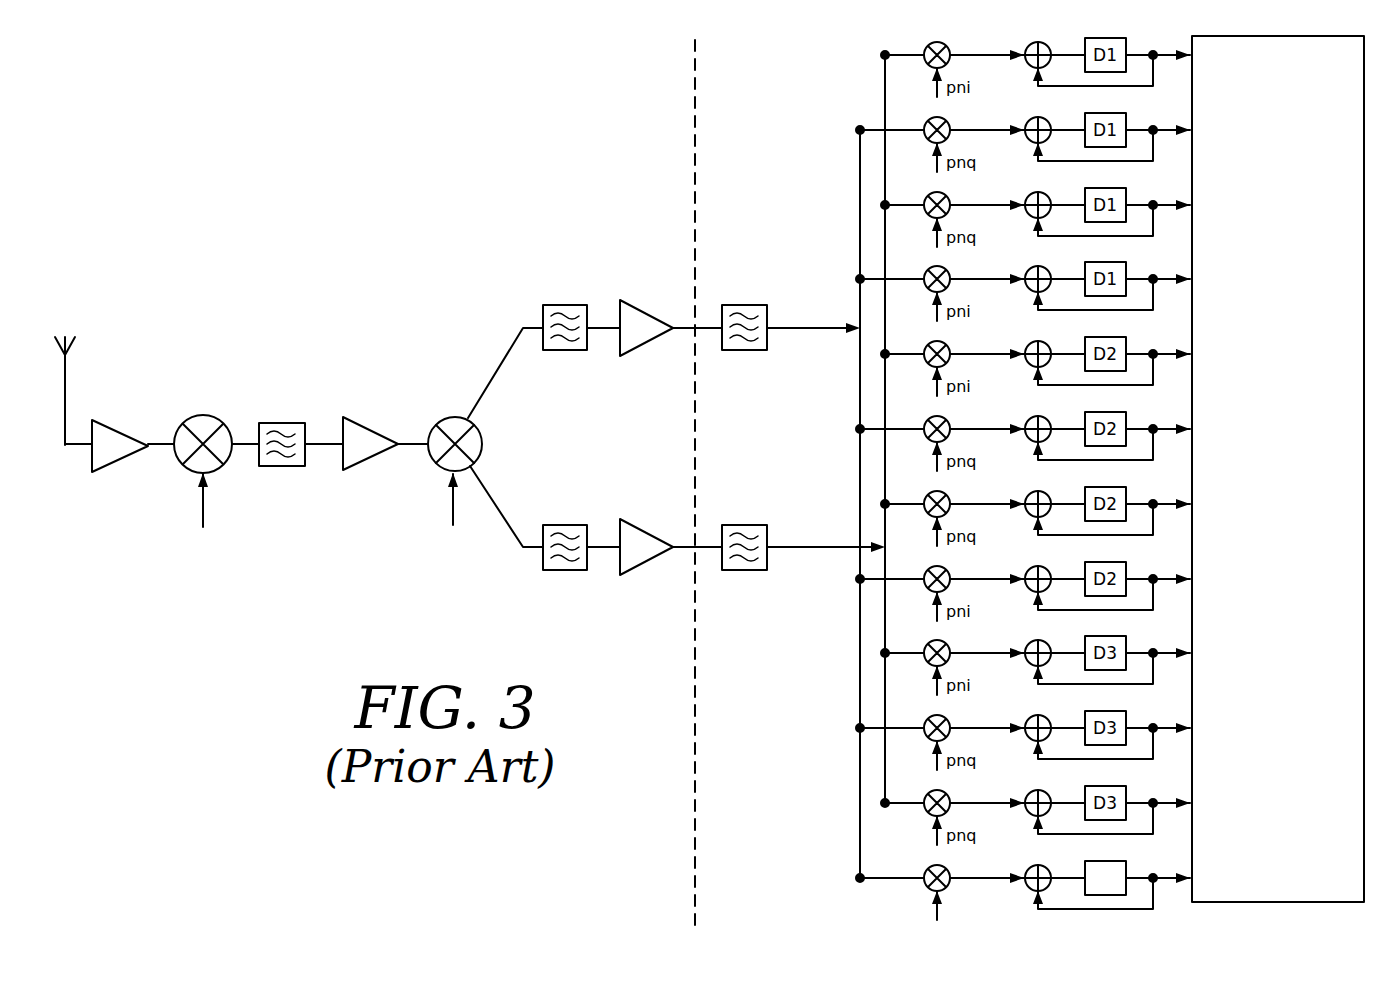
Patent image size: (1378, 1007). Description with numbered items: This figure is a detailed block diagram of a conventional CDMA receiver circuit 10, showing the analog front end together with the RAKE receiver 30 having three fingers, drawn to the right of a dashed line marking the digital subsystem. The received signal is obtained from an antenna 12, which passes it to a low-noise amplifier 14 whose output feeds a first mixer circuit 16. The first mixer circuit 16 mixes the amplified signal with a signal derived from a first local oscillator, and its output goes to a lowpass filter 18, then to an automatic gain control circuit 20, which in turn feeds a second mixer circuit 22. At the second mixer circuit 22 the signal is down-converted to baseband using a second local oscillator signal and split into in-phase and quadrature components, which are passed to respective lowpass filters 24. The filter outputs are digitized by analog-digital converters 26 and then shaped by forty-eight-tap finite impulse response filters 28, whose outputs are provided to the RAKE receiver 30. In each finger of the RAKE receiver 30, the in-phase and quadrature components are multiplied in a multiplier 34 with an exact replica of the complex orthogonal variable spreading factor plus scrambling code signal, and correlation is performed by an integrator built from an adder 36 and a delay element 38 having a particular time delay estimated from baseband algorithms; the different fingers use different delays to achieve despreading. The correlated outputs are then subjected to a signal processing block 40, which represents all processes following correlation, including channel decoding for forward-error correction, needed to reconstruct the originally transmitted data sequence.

The CDMA receiver circuit 10 is at (286, 261).
The antenna 12 is at (80, 359).
The low-noise amplifier 14 is at (117, 460).
The first mixer circuit 16 is at (203, 415).
The lowpass filter 18 is at (282, 466).
The automatic gain control circuit 20 is at (372, 458).
The second mixer circuit 22 is at (437, 417).
The lowpass filters 24 is at (568, 350).
The analog-digital converters 26 is at (640, 353).
The finite impulse response filters 28 is at (727, 350).
The RAKE receiver 30 is at (786, 814).
The multiplier 34 is at (926, 886).
The adder 36 is at (1046, 890).
The delay element 38 is at (1120, 895).
The signal processing block 40 is at (1278, 469).